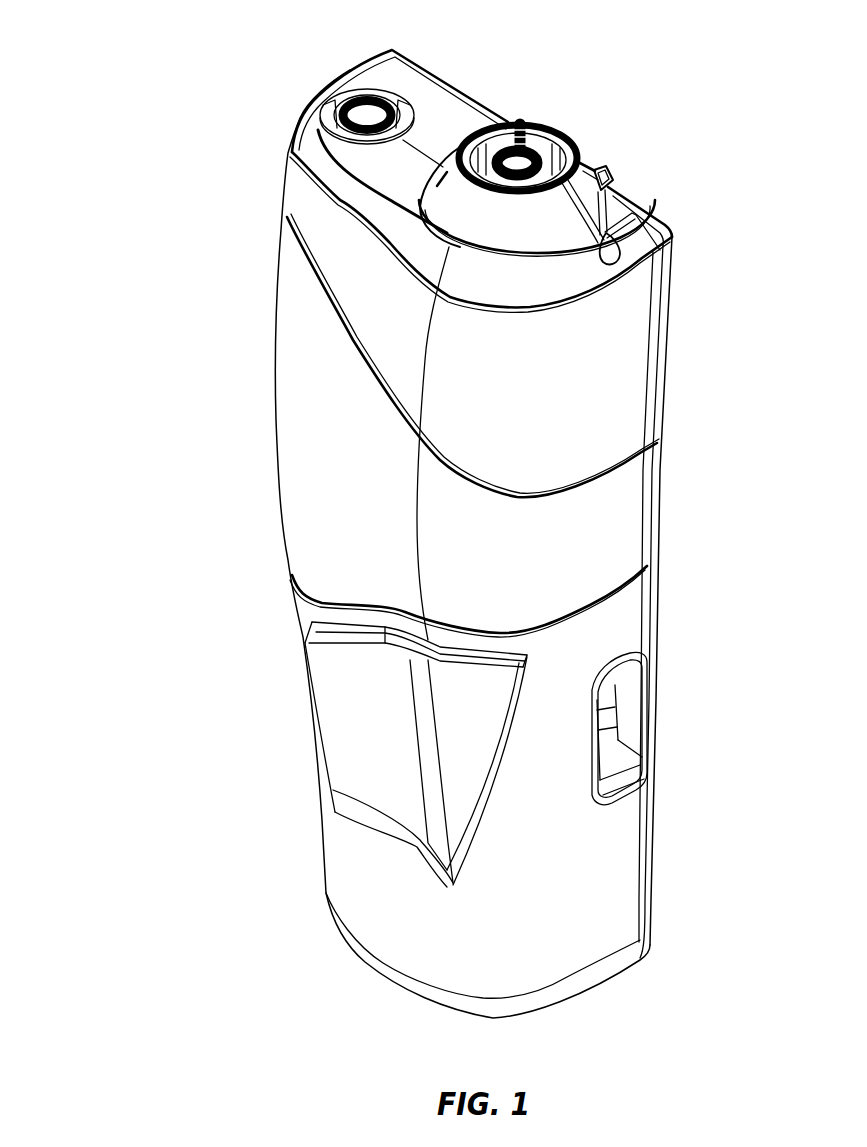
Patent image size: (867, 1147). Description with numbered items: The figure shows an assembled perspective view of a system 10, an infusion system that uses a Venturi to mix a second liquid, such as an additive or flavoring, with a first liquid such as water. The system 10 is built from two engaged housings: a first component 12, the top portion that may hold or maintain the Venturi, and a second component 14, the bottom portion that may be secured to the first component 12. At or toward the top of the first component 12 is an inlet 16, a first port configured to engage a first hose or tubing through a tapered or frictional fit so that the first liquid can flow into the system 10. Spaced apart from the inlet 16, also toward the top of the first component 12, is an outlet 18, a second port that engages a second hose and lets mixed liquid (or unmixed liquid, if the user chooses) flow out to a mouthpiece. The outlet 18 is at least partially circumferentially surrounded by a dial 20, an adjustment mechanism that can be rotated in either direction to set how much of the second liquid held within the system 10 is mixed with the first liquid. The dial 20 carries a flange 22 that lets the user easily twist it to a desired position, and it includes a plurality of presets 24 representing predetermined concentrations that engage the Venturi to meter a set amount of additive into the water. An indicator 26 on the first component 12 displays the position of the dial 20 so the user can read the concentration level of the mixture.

The system 10 is at (168, 165).
The first component 12 is at (623, 520).
The second component 14 is at (610, 923).
The inlet 16 is at (382, 112).
The outlet 18 is at (517, 163).
The dial 20 is at (533, 227).
The flange 22 is at (603, 183).
The presets 24 is at (521, 124).
The indicator 26 is at (616, 251).